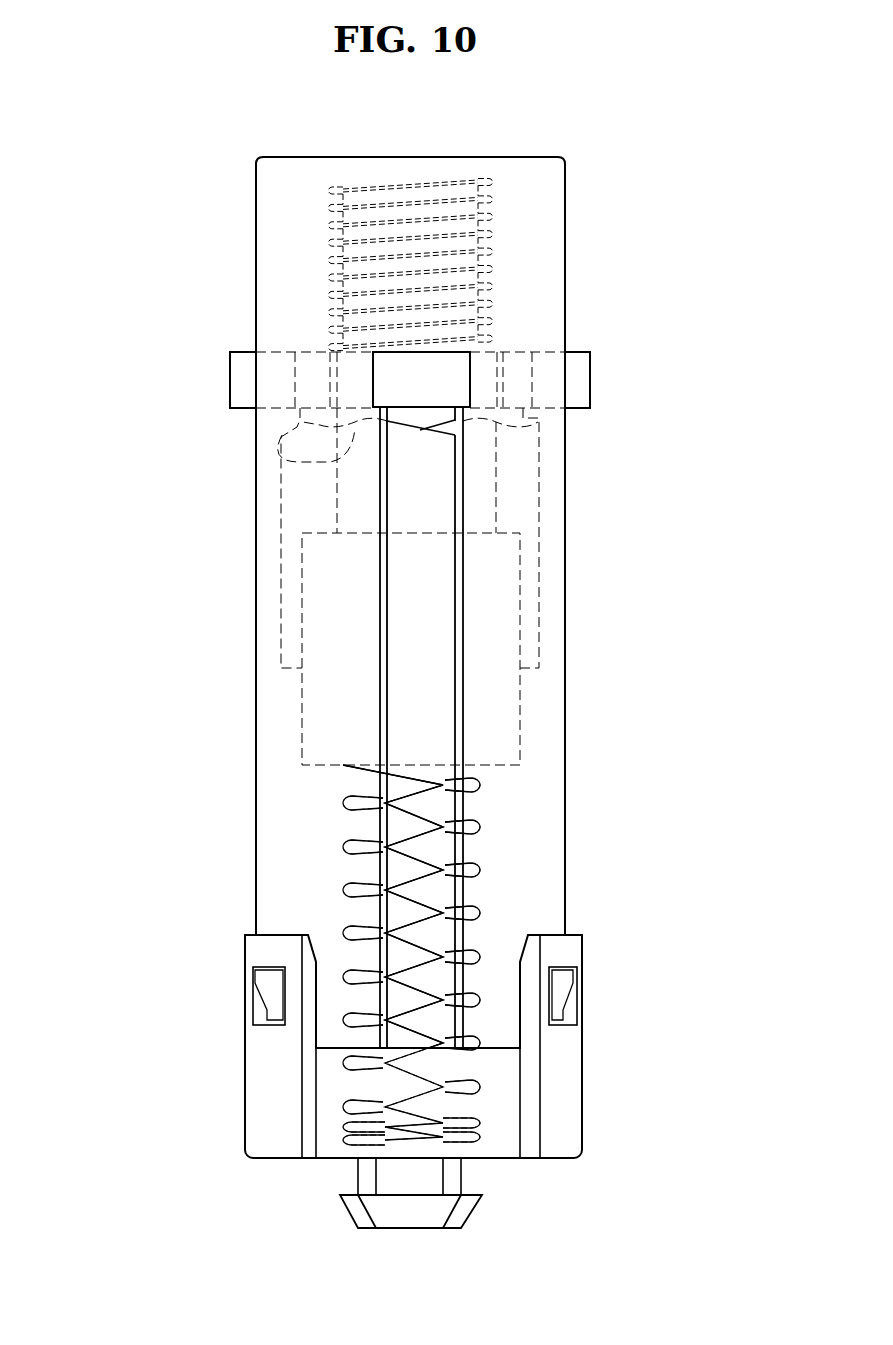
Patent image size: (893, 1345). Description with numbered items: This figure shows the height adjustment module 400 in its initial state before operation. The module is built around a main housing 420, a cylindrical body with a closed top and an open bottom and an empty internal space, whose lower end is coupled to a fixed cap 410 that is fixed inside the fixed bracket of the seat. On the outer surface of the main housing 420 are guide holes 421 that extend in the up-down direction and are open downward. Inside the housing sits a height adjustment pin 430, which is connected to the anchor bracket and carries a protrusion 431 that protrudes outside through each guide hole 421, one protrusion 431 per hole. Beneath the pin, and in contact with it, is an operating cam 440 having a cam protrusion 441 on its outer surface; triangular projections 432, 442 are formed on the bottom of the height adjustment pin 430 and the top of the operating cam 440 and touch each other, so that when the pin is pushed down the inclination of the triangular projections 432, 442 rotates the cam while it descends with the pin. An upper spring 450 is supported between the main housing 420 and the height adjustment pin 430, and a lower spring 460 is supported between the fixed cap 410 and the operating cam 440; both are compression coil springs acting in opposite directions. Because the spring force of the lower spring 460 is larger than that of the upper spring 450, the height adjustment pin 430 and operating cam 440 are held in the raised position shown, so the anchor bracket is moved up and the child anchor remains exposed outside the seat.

The height adjustment module 400 is at (574, 588).
The fixed cap 410 is at (268, 1100).
The main housing 420 is at (277, 232).
The guide hole 421 is at (457, 802).
The height adjustment pin 430 is at (310, 363).
The protrusion 431 is at (250, 380).
The triangular projection 432 is at (345, 458).
The triangular projection 442 is at (500, 422).
The operating cam 440 is at (330, 720).
The cam protrusion 441 is at (412, 488).
The upper spring 450 is at (493, 253).
The lower spring 460 is at (410, 878).